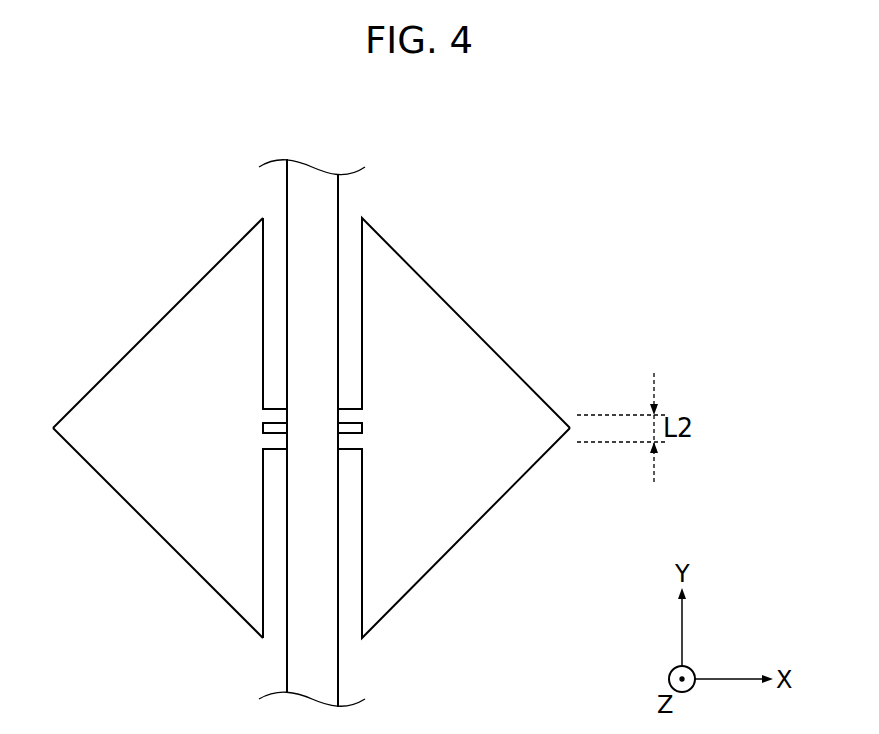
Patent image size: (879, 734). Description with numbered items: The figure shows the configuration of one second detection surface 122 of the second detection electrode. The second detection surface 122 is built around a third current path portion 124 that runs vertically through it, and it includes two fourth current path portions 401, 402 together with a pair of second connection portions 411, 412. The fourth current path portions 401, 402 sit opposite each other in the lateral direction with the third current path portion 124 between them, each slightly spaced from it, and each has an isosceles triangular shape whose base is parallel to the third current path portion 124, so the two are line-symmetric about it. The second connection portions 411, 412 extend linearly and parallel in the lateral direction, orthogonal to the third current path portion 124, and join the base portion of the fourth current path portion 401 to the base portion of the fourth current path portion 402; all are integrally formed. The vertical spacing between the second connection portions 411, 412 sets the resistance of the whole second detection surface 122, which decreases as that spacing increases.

The second detection surface 122 is at (315, 425).
The third current path portion 124 is at (338, 203).
The fourth current path portion 401 is at (170, 425).
The fourth current path portion 402 is at (498, 362).
The second connection portion 411 is at (277, 405).
The second connection portion 412 is at (277, 452).